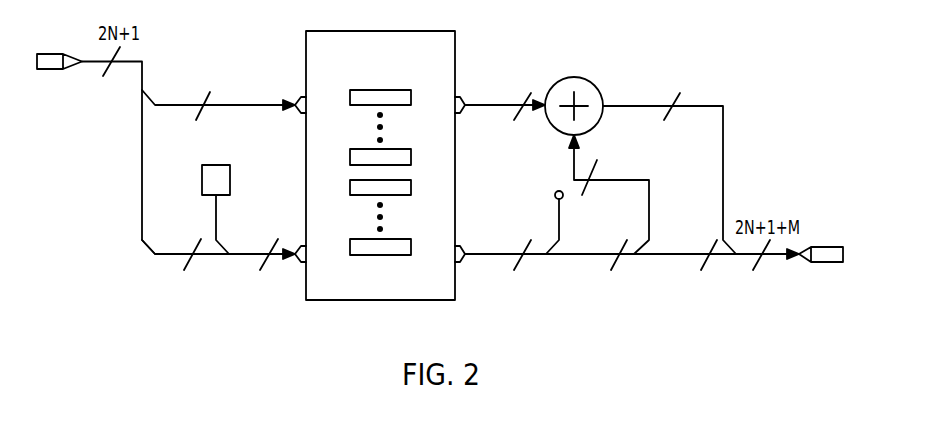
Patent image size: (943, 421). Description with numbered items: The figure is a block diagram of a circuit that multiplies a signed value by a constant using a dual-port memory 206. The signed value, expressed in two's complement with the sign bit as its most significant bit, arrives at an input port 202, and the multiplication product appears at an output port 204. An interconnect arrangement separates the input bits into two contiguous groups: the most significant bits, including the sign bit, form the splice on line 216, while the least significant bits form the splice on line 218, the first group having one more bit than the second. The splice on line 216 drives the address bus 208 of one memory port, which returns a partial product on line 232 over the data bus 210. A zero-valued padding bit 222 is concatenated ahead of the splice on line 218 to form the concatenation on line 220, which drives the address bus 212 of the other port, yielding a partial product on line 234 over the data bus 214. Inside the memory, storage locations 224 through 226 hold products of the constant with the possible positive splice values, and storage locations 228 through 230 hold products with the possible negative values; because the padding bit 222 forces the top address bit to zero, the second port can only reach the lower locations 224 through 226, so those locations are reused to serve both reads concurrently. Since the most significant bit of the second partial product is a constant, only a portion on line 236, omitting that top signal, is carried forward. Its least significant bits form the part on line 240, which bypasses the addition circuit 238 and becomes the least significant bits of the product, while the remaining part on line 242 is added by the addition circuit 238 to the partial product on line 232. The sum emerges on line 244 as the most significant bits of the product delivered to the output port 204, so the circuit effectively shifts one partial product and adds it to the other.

The input port 202 is at (65, 53).
The output port 204 is at (830, 246).
The dual-port memory 206 is at (370, 30).
The address bus 208 is at (296, 113).
The data bus 210 is at (465, 114).
The address bus 212 is at (296, 263).
The data bus 214 is at (465, 263).
The most significant splice line 216 is at (175, 104).
The least significant splice line 218 is at (176, 253).
The concatenation line 220 is at (250, 253).
The padding bit 222 is at (220, 165).
The storage location 224 is at (392, 239).
The storage location 226 is at (372, 196).
The storage location 228 is at (390, 149).
The storage location 230 is at (372, 106).
The partial product line 232 is at (490, 105).
The partial product line 234 is at (490, 253).
The portion line 236 is at (593, 253).
The addition circuit 238 is at (576, 77).
The bypass part line 240 is at (684, 253).
The remaining part line 242 is at (625, 179).
The product line 244 is at (630, 105).